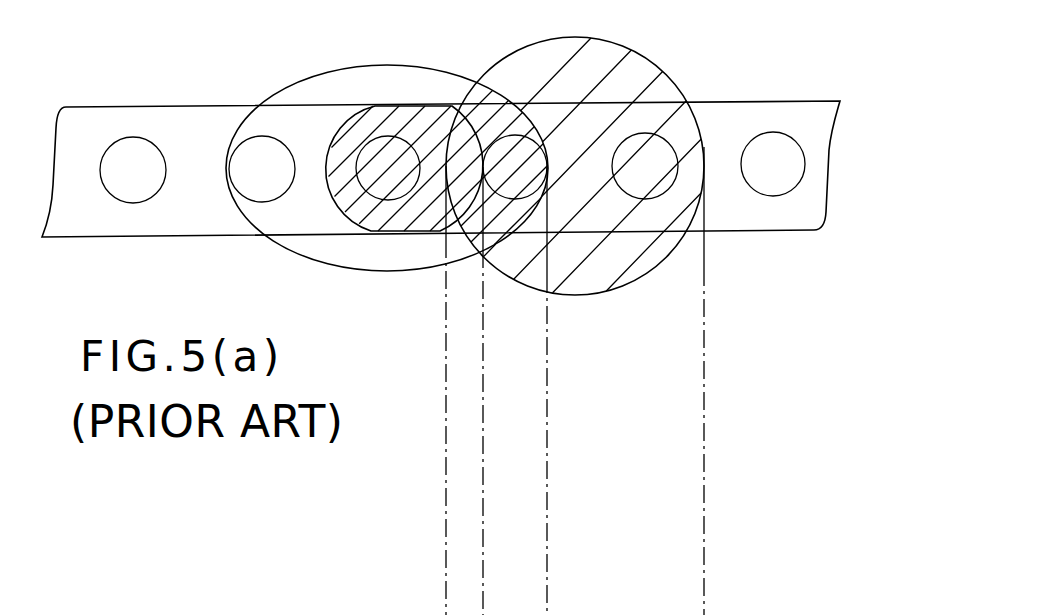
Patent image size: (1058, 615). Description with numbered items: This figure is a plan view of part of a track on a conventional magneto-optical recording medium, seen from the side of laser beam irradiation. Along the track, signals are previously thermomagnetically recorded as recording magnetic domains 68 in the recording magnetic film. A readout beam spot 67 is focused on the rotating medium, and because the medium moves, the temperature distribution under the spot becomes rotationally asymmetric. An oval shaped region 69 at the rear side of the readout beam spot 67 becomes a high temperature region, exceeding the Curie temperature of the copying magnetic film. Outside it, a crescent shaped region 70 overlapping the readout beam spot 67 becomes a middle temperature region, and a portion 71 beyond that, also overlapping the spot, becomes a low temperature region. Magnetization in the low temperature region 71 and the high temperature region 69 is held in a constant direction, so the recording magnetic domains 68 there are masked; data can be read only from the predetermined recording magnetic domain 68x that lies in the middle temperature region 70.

The readout beam spot 67 is at (683, 78).
The recording magnetic domains 68 is at (777, 196).
The predetermined recording magnetic domain 68x is at (547, 200).
The oval shaped region 69 is at (363, 123).
The crescent shaped region 70 is at (480, 113).
The portion 71 is at (642, 70).